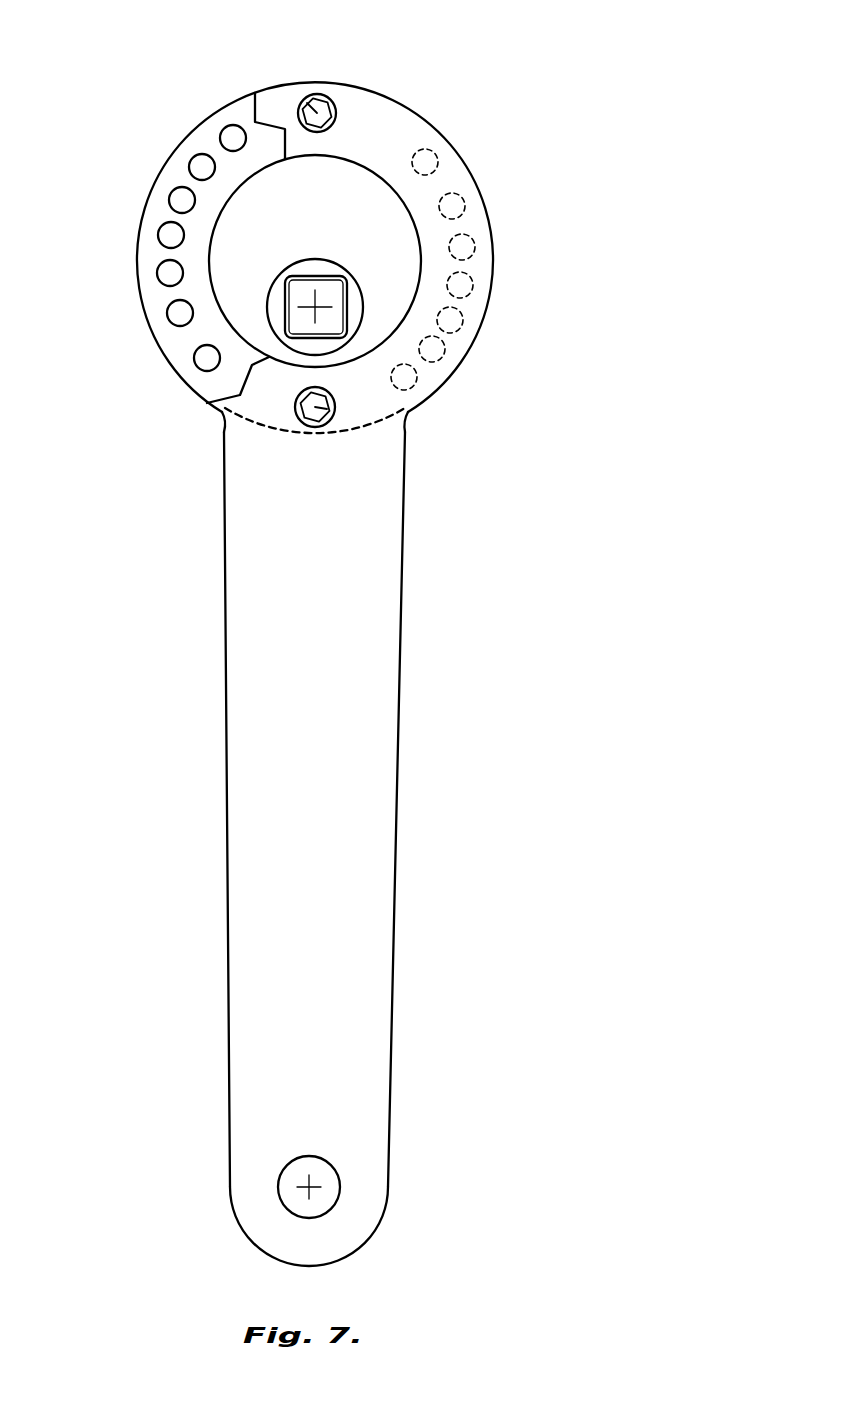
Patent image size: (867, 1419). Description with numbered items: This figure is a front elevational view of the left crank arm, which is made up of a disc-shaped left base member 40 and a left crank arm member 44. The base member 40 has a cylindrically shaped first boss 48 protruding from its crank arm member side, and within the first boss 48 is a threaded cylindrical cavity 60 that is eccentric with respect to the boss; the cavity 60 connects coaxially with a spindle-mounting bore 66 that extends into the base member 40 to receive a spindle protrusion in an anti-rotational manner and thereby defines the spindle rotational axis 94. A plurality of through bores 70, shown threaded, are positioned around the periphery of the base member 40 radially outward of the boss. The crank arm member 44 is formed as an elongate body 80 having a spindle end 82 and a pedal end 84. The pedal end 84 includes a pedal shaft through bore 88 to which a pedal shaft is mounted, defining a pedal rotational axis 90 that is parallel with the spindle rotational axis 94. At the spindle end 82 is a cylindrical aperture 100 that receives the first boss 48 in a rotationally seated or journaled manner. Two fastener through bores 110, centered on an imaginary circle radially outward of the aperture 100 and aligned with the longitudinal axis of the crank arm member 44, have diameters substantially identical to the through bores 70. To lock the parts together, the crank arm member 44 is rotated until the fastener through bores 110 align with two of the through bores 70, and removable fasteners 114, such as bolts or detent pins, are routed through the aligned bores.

The left base member 40 is at (311, 674).
The left crank arm member 44 is at (327, 849).
The first boss 48 is at (221, 271).
The threaded cylindrical cavity 60 is at (345, 281).
The spindle-mounting bore 66 is at (356, 276).
The through bores 70 is at (222, 127).
The elongate body 80 is at (402, 618).
The spindle end 82 is at (453, 167).
The pedal end 84 is at (228, 1030).
The pedal shaft through bore 88 is at (280, 1170).
The pedal rotational axis 90 is at (313, 1183).
The spindle rotational axis 94 is at (285, 306).
The cylindrical aperture 100 is at (378, 168).
The fastener through bores 110 is at (334, 105).
The removable fasteners 114 is at (306, 103).